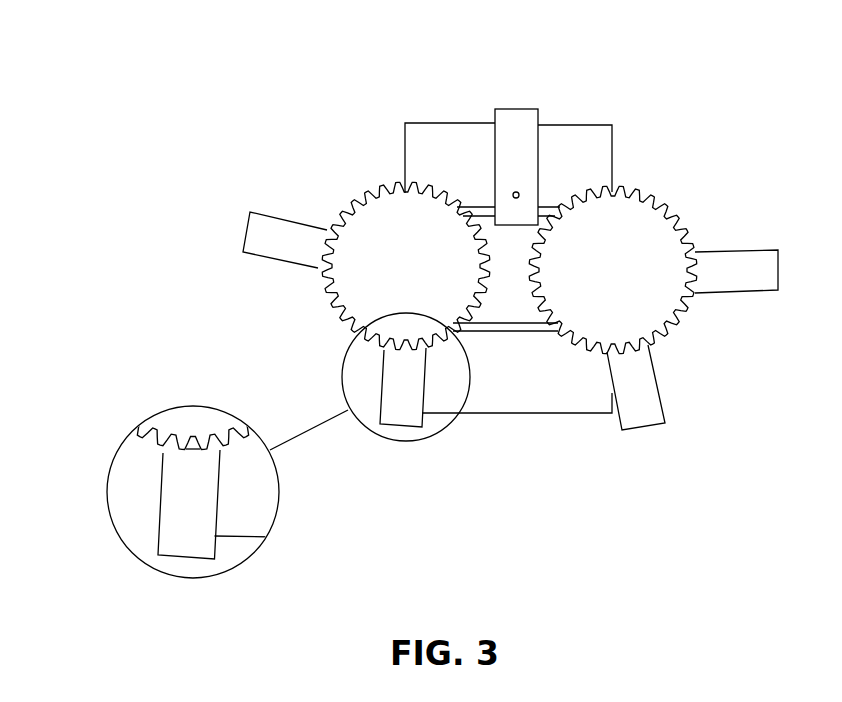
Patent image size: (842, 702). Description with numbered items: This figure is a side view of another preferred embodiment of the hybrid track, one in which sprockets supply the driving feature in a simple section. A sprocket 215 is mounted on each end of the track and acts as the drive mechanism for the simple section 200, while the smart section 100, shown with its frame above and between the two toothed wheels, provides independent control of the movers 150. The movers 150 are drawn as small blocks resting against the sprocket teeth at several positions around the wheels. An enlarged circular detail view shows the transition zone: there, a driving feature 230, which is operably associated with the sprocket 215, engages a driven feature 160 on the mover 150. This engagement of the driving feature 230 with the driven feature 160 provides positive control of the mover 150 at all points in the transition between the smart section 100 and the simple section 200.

The smart section 100 is at (570, 124).
The mover 150 is at (269, 214).
The simple section 200 is at (696, 227).
The sprocket 215 is at (329, 306).
The driving feature 230 is at (179, 448).
The driven feature 160 is at (196, 443).